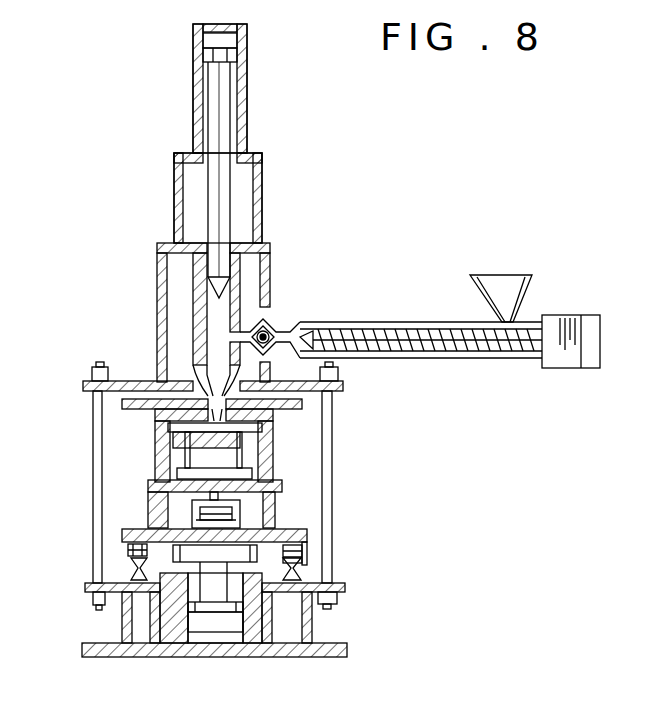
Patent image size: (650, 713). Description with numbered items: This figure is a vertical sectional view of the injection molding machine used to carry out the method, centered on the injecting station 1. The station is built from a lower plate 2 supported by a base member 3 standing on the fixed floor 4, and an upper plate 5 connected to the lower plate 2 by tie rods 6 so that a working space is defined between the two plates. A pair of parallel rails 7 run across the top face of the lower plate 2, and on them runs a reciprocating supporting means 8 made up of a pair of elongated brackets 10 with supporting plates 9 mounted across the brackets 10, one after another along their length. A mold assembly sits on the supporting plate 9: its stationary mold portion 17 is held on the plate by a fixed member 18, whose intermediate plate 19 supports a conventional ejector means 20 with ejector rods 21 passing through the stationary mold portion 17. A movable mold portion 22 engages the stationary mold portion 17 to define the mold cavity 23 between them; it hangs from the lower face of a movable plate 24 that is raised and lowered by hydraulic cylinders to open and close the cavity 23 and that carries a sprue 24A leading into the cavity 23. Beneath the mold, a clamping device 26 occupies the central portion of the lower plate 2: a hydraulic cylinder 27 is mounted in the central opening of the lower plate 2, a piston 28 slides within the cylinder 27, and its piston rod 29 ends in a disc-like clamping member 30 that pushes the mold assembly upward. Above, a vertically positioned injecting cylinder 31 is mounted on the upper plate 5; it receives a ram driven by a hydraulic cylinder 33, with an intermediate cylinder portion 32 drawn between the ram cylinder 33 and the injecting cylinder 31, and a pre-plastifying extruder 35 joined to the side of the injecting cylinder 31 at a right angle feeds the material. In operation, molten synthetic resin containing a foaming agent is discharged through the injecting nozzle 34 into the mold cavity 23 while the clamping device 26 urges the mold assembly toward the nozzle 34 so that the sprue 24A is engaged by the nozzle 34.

The injecting station 1 is at (310, 460).
The lower plate 2 is at (345, 588).
The base member 3 is at (310, 640).
The fixed floor 4 is at (298, 650).
The upper plate 5 is at (345, 388).
The tie rods 6 is at (93, 466).
The rails 7 is at (130, 568).
The supporting means 8 is at (120, 530).
The supporting plates 9 is at (295, 531).
The elongated brackets 10 is at (310, 541).
The stationary mold portion 17 is at (160, 440).
The fixed member 18 is at (268, 510).
The intermediate plate 19 is at (156, 480).
The ejector means 20 is at (185, 505).
The ejector rods 21 is at (190, 460).
The movable mold portion 22 is at (262, 428).
The mold cavity 23 is at (262, 445).
The movable plate 24 is at (122, 408).
The sprue 24A is at (163, 419).
The clamping device 26 is at (234, 652).
The hydraulic cylinder 27 is at (178, 638).
The piston 28 is at (208, 612).
The piston rod 29 is at (256, 590).
The clamping member 30 is at (170, 525).
The injecting cylinder 31 is at (240, 282).
The hydraulic cylinder 32 is at (232, 181).
The hydraulic cylinder 33 is at (247, 74).
The injecting nozzle 34 is at (208, 370).
The pre-plastifying extruder 35 is at (408, 322).